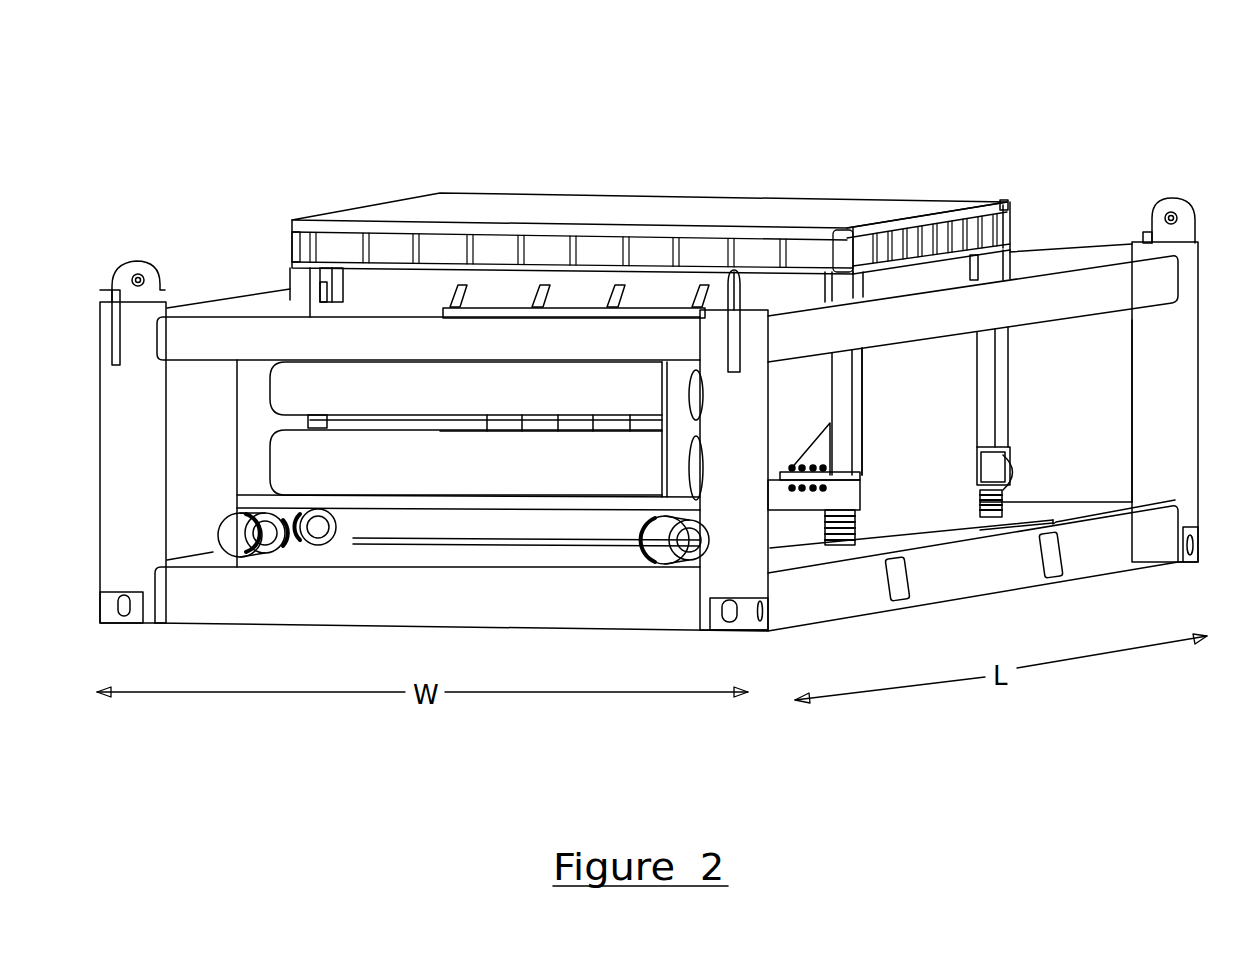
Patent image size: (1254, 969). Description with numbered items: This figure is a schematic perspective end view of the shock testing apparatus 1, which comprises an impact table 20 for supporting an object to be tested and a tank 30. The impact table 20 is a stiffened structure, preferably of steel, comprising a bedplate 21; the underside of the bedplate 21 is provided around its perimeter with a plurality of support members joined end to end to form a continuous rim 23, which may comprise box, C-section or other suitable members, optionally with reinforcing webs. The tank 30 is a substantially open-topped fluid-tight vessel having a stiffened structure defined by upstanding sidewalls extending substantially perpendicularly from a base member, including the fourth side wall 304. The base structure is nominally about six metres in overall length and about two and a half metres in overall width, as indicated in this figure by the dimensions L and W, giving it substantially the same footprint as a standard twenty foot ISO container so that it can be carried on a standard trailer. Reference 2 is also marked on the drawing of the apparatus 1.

The shock testing apparatus 1 is at (649, 342).
The electrolysis module roof side 2 is at (947, 179).
The impact table 20 is at (651, 165).
The bedplate 21 is at (772, 207).
The rim 23 is at (548, 245).
The tank 30 is at (975, 578).
The fourth side wall 304 is at (950, 433).